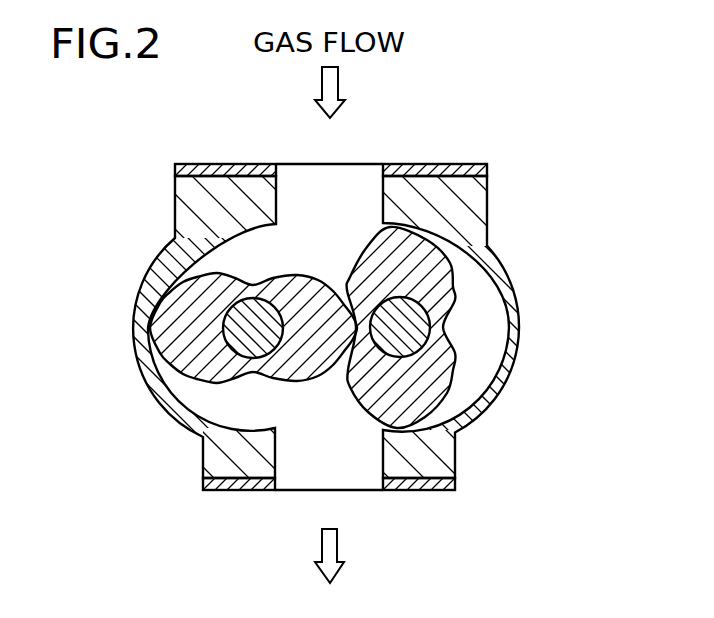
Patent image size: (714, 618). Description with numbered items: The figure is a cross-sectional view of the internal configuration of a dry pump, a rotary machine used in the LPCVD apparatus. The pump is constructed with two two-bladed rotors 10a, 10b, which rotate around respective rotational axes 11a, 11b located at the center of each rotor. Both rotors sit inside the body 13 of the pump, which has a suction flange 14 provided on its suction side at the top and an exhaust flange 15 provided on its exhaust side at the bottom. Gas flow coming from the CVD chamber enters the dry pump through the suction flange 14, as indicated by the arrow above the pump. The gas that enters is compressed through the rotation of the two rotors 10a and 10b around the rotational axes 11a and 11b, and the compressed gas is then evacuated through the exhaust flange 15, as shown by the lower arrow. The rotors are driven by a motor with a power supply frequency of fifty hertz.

The two-bladed rotor 10a is at (207, 289).
The two-bladed rotor 10b is at (445, 290).
The rotational axis 11a is at (247, 328).
The rotational axis 11b is at (422, 323).
The body 13 is at (488, 212).
The suction flange 14 is at (454, 164).
The exhaust flange 15 is at (418, 492).